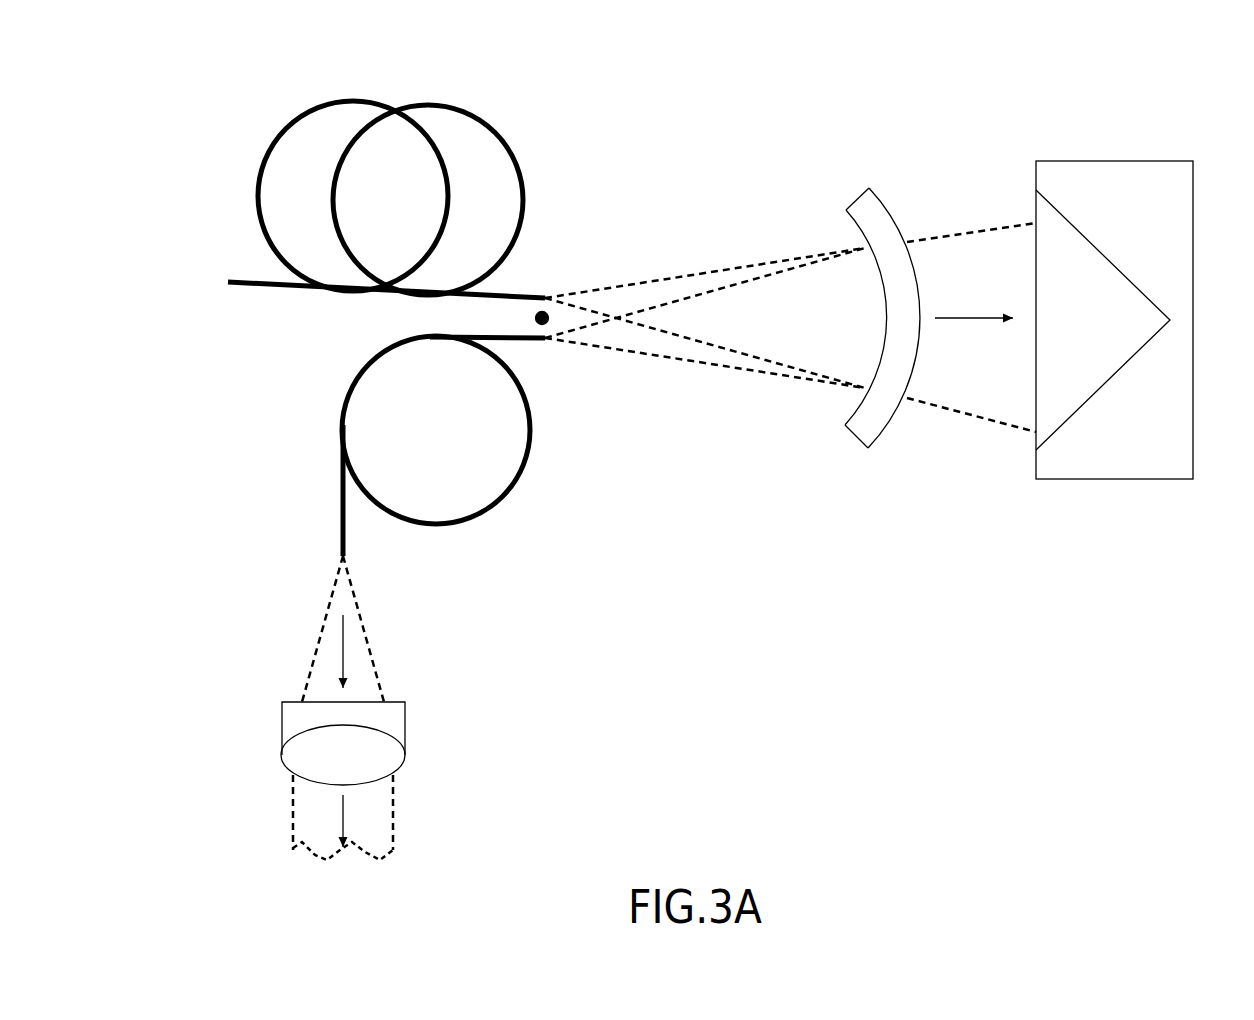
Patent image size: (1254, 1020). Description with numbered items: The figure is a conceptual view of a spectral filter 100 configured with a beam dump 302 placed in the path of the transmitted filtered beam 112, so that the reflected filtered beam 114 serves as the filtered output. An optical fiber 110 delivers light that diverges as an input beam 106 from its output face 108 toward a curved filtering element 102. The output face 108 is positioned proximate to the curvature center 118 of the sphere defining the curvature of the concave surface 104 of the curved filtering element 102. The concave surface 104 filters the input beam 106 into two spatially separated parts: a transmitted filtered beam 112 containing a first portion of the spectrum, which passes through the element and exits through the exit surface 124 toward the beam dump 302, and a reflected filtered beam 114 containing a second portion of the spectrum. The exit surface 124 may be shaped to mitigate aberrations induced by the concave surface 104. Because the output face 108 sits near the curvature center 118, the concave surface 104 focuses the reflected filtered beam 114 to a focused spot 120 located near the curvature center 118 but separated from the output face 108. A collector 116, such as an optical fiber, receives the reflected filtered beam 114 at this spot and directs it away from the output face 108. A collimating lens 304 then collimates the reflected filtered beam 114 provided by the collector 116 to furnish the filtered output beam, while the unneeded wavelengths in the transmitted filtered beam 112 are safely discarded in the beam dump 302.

The spectral filter 100 is at (195, 31).
The curved filtering element 102 is at (867, 306).
The concave surface 104 is at (862, 242).
The input beam 106 is at (607, 300).
The output face 108 is at (543, 289).
The optical fiber 110 is at (486, 102).
The transmitted filtered beam 112 is at (975, 398).
The reflected filtered beam 114 is at (607, 337).
The collector 116 is at (519, 515).
The curvature center 118 is at (536, 318).
The focused spot 120 is at (544, 348).
The exit surface 124 is at (886, 210).
The beam dump 302 is at (1112, 160).
The collimating lens 304 is at (282, 720).